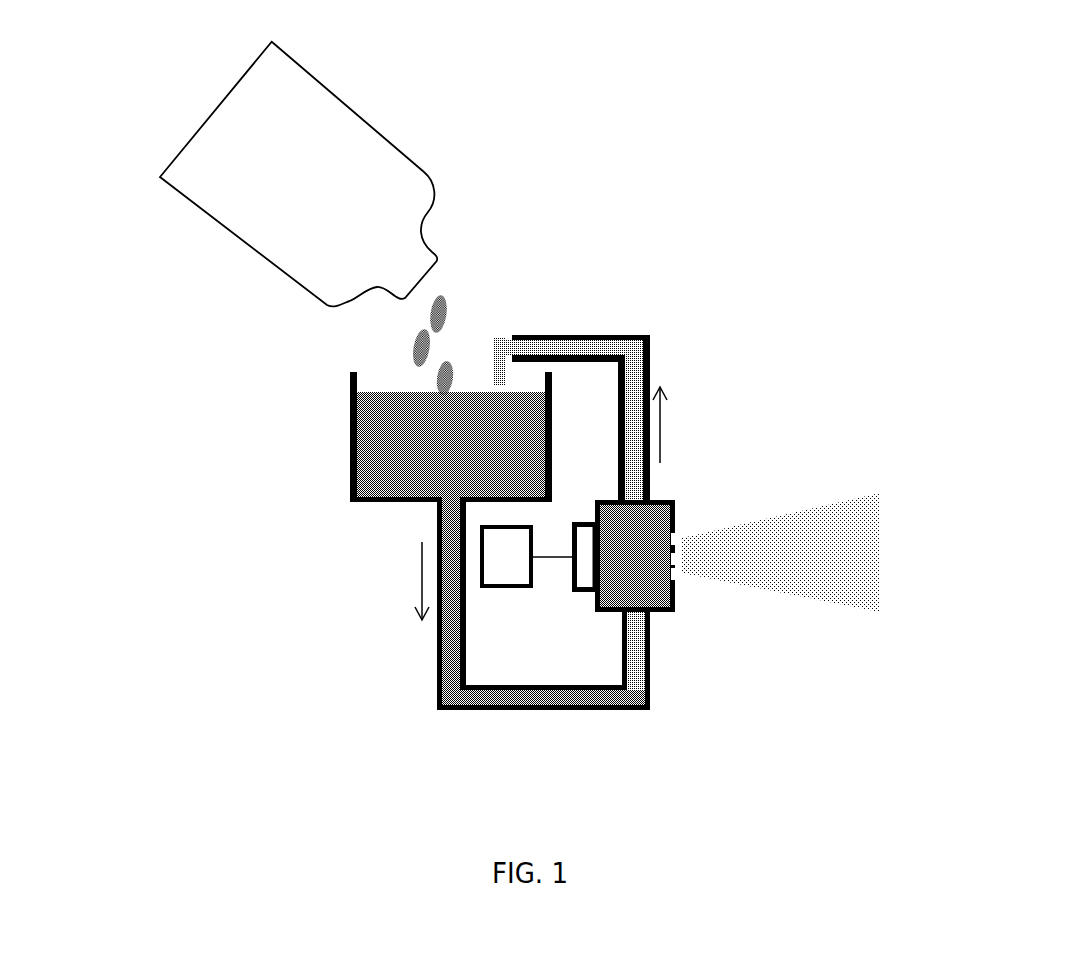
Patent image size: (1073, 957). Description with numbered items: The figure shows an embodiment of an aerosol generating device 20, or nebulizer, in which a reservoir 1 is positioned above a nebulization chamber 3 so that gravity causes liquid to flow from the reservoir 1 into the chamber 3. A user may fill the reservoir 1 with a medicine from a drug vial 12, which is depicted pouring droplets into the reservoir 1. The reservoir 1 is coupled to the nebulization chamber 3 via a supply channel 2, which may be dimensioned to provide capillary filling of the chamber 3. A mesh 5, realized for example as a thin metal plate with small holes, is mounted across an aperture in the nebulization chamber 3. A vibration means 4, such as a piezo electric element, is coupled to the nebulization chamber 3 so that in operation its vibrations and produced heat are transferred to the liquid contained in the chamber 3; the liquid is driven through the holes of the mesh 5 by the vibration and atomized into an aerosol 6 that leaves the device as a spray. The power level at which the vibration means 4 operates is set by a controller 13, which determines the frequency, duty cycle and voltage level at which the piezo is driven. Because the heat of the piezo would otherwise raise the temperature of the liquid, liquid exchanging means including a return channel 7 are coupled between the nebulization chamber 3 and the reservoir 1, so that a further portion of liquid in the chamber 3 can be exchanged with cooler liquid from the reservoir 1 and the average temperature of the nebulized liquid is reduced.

The reservoir 1 is at (388, 428).
The supply channel 2 is at (450, 668).
The nebulization chamber 3 is at (677, 605).
The vibration means 4 is at (583, 522).
The mesh 5 is at (677, 542).
The aerosol 6 is at (857, 592).
The return channel 7 is at (633, 373).
The drug vial 12 is at (260, 255).
The controller 13 is at (527, 556).
The aerosol generating device 20 is at (890, 342).